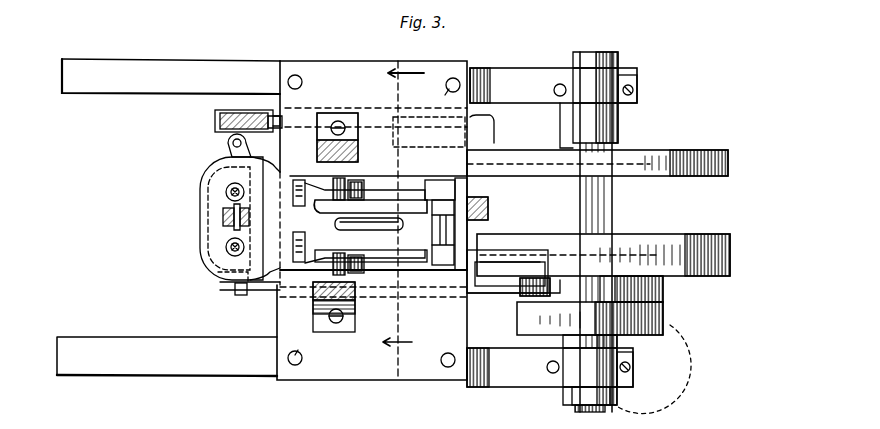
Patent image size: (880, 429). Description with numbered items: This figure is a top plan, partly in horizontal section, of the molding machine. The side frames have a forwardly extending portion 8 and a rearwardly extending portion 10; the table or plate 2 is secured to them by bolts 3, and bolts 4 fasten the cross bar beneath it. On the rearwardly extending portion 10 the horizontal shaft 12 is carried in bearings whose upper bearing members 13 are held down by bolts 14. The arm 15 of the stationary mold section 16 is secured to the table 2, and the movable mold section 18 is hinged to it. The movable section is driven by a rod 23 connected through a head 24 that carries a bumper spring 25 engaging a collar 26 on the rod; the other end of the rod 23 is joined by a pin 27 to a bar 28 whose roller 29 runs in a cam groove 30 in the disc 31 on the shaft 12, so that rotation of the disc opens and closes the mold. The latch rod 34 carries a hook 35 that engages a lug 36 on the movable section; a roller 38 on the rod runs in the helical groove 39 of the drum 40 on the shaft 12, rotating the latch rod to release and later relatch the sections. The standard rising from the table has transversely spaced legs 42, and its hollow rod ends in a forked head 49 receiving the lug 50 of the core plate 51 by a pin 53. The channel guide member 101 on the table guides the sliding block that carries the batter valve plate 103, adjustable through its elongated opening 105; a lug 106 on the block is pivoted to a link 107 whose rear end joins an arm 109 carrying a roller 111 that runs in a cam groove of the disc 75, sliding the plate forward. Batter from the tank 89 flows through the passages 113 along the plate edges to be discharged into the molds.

The table or plate 2 is at (394, 220).
The bolts 3 is at (369, 222).
The bolts 4 is at (409, 209).
The forwardly extending portion 8 is at (126, 88).
The rearwardly extending portion 10 is at (527, 72).
The horizontal shaft 12 is at (611, 232).
The upper bearing members 13 is at (576, 100).
The bolts 14 is at (638, 96).
The arm of the mold section 15 is at (293, 204).
The mold section 16 is at (287, 246).
The movable mold section 18 is at (208, 258).
The rod 23 is at (372, 220).
The head 24 is at (252, 136).
The bumper spring 25 is at (213, 126).
The collar 26 is at (284, 108).
The pin 27 is at (337, 114).
The bar 28 is at (429, 144).
The roller 29 is at (494, 160).
The cam groove 30 is at (530, 160).
The disc 31 is at (660, 152).
The latch rod 34 is at (268, 296).
The hook 35 is at (235, 290).
The lug 36 is at (215, 283).
The roller 38 is at (533, 298).
The helical groove 39 is at (664, 292).
The drum 40 is at (666, 318).
The legs 42 is at (358, 147).
The forked head 49 is at (226, 210).
The lug 50 is at (225, 228).
The core plate 51 is at (215, 220).
The pin 53 is at (248, 212).
The disc 75 is at (674, 244).
The tank 89 is at (695, 365).
The channel guide member 101 is at (432, 182).
The plate 103 is at (369, 230).
The elongated opening 105 is at (384, 232).
The lug or projection 106 is at (472, 240).
The link 107 is at (524, 264).
The arm 109 is at (555, 280).
The roller 111 is at (510, 262).
The passage 113 is at (358, 197).